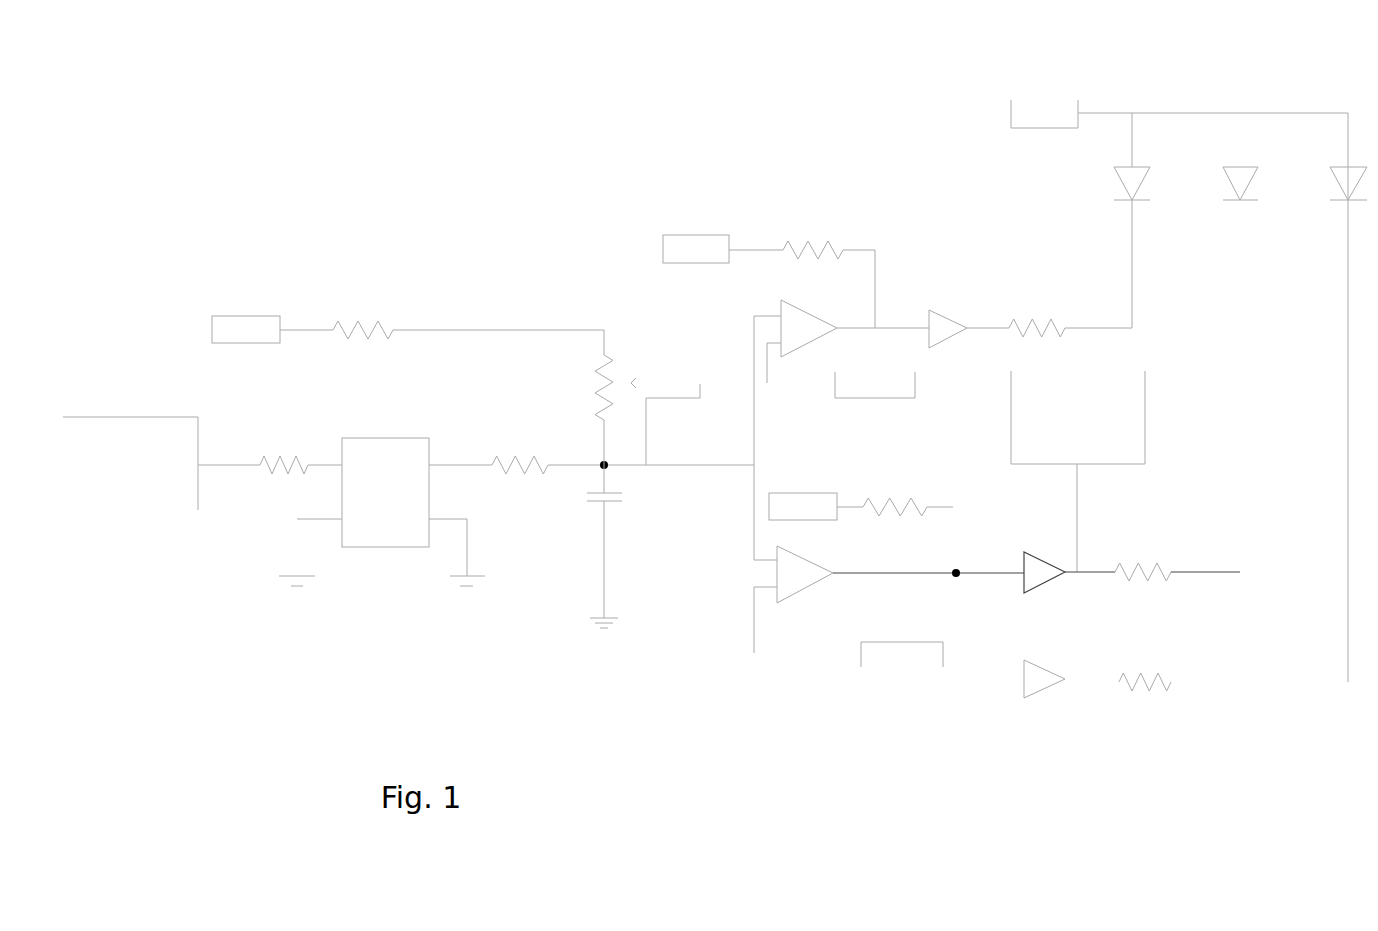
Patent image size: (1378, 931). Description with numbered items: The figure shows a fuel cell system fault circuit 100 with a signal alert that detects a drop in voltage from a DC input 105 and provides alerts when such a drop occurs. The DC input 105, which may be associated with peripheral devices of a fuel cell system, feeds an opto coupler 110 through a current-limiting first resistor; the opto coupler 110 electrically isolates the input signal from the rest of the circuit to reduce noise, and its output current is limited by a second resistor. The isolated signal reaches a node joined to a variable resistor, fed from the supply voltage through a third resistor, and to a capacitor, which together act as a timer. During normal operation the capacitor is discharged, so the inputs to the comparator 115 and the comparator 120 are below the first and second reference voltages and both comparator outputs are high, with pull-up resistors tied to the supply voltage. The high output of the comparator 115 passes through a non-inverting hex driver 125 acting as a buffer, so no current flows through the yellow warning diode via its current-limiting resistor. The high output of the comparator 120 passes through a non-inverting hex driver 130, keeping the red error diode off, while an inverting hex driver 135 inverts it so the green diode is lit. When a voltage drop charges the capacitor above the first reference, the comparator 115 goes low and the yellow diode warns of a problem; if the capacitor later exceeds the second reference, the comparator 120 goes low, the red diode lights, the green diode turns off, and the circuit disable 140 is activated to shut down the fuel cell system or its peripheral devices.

The fuel cell system fault circuit 100 is at (368, 134).
The DC input 105 is at (117, 498).
The opto coupler 110 is at (371, 518).
The comparator 115 is at (803, 308).
The comparator 120 is at (808, 587).
The non-inverting hex driver 125 is at (952, 318).
The non-inverting hex driver 130 is at (1040, 557).
The inverting hex driver 135 is at (1049, 668).
The circuit disable 140 is at (1063, 449).